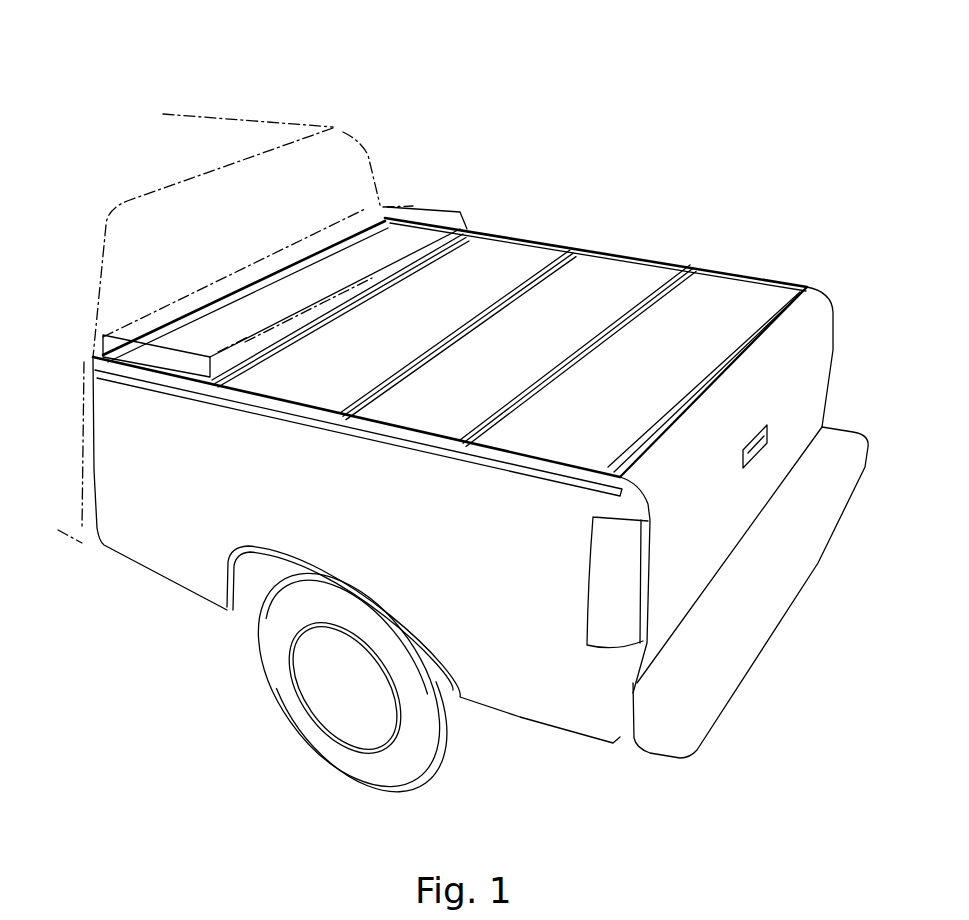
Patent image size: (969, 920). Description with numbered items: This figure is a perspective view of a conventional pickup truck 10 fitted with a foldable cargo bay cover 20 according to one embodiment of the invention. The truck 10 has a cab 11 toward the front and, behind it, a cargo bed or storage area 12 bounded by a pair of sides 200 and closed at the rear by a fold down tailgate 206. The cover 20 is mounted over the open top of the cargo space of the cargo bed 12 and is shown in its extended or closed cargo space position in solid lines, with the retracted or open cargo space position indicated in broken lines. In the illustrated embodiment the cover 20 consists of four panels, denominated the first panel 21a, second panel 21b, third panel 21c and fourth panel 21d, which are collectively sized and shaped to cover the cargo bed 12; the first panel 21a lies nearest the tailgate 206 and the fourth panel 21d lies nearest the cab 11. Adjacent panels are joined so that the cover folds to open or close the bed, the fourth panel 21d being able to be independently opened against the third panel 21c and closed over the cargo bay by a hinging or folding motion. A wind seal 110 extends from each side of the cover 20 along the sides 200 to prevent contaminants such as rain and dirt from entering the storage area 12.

The pickup truck 10 is at (480, 66).
The cab 11 is at (363, 155).
The cargo bed 12 is at (328, 378).
The cover 20 is at (410, 205).
The first panel 21a is at (732, 300).
The second panel 21b is at (610, 270).
The third panel 21c is at (505, 255).
The fourth panel 21d is at (430, 225).
The wind seal 110 is at (405, 438).
The sides 200 is at (807, 288).
The tailgate 206 is at (833, 373).